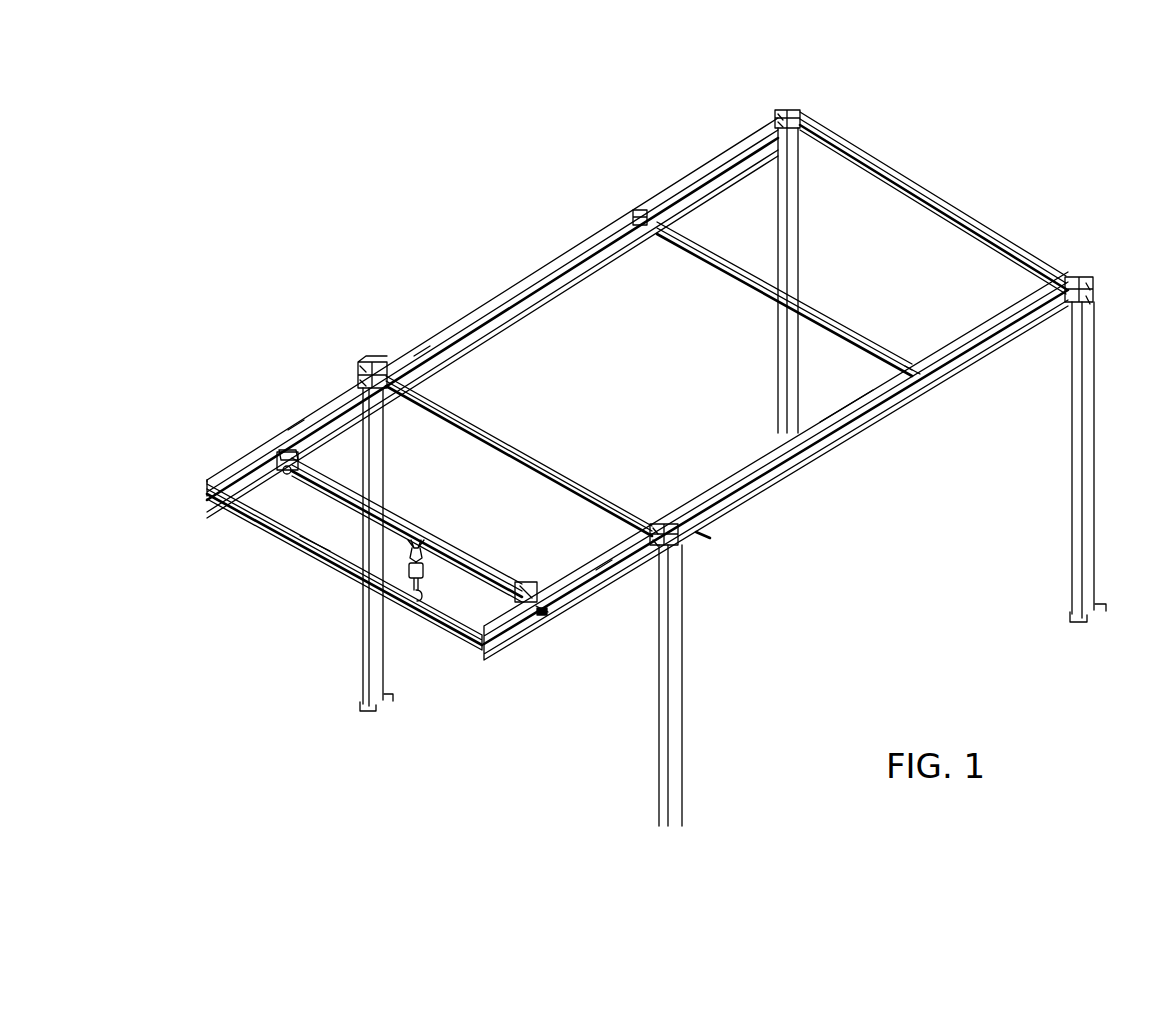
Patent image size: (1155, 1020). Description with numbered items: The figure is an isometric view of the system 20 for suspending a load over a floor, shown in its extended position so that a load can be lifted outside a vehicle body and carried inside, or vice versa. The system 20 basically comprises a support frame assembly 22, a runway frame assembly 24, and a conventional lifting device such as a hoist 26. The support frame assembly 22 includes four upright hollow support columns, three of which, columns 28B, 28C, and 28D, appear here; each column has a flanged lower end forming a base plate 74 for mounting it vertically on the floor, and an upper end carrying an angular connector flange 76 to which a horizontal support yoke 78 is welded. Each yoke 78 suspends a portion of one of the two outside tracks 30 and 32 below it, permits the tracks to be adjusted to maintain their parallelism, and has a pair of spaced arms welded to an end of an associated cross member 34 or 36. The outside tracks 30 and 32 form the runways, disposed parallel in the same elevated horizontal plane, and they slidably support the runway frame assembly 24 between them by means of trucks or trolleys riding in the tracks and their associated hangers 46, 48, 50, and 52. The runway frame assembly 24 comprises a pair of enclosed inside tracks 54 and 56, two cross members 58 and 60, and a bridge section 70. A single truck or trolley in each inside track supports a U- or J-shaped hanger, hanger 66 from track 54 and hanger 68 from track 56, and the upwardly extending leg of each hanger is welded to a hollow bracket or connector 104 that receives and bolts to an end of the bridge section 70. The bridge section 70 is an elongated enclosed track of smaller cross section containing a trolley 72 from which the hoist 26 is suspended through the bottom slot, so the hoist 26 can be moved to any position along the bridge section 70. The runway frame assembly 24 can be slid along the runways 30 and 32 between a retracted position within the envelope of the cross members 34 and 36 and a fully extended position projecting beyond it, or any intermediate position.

The system 20 is at (443, 177).
The support frame assembly 22 is at (757, 496).
The runway frame assembly 24 is at (222, 470).
The hoist 26 is at (432, 623).
The upright support column 28B is at (1072, 522).
The upright support column 28C is at (778, 372).
The upright support column 28D is at (362, 668).
The outside track 30 is at (820, 458).
The outside track 32 is at (507, 278).
The cross member 34 is at (573, 473).
The cross member 36 is at (936, 196).
The hanger 46 is at (700, 530).
The hanger 48 is at (917, 400).
The hanger 50 is at (422, 352).
The hanger 52 is at (632, 205).
The inside track 54 is at (604, 576).
The inside track 56 is at (296, 432).
The cross member 58 is at (312, 556).
The cross member 60 is at (760, 292).
The hanger 66 is at (541, 616).
The hanger 68 is at (284, 472).
The bridge section 70 is at (463, 547).
The trolley 72 is at (424, 538).
The base plate 74 is at (609, 825).
The angular connector flange 76 is at (360, 360).
The horizontal support yoke 78 is at (379, 356).
The bracket or connector 104 is at (301, 447).